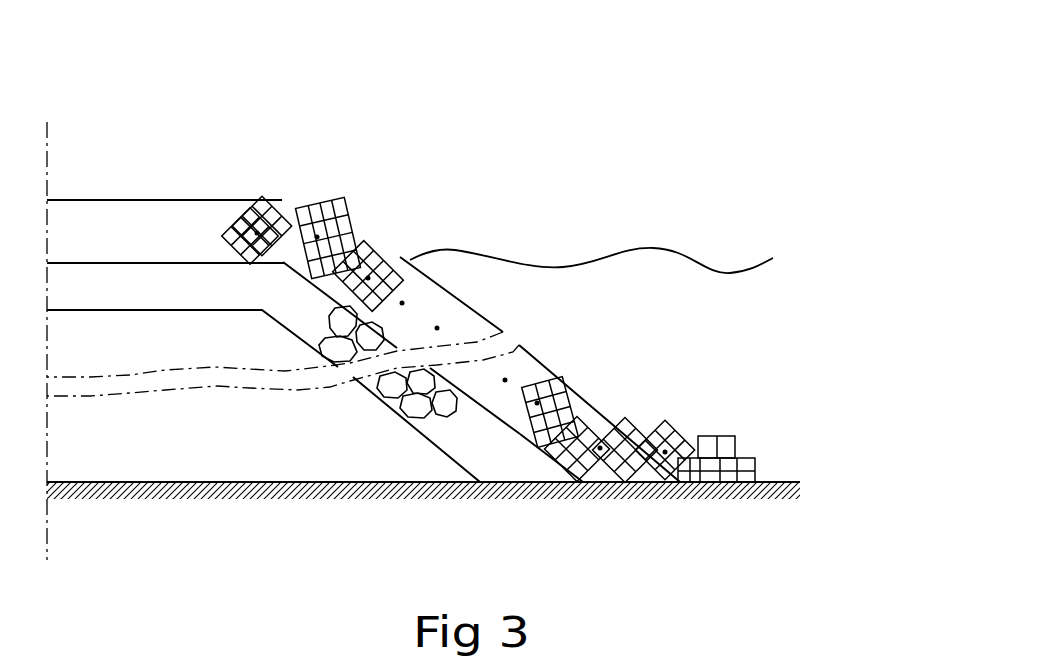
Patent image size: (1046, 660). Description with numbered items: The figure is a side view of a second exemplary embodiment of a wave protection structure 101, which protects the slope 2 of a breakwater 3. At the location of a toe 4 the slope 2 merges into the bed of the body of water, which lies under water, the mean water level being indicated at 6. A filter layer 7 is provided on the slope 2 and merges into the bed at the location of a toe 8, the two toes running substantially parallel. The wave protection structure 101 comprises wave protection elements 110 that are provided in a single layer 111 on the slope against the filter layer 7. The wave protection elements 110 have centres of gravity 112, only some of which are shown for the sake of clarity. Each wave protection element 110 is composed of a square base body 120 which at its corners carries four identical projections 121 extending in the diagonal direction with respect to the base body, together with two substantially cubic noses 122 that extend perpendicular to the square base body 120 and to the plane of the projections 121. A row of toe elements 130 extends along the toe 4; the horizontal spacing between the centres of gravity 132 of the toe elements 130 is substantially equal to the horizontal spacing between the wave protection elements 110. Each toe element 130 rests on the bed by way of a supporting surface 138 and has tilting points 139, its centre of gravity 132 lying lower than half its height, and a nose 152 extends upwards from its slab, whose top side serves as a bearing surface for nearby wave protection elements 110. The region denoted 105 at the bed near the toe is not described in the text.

The wave protection structure 101 is at (481, 139).
The slope 2 is at (479, 458).
The breakwater 3 is at (260, 508).
The toe 4 is at (469, 508).
The mean water level 6 is at (663, 246).
The filter layer 7 is at (400, 337).
The toe 8 is at (580, 495).
The wave protection elements 110 is at (403, 236).
The single layer 111 is at (437, 272).
The centre of gravity 112 is at (257, 230).
The square base body 120 is at (244, 217).
The projections 121 is at (237, 199).
The noses 122 is at (288, 191).
The toe elements 130 is at (759, 392).
The centre of gravity 132 is at (758, 463).
The nose 152 is at (737, 437).
The seabed at toe 105 is at (788, 457).
The supporting surface 138 is at (714, 492).
The tilting points 139 is at (758, 481).